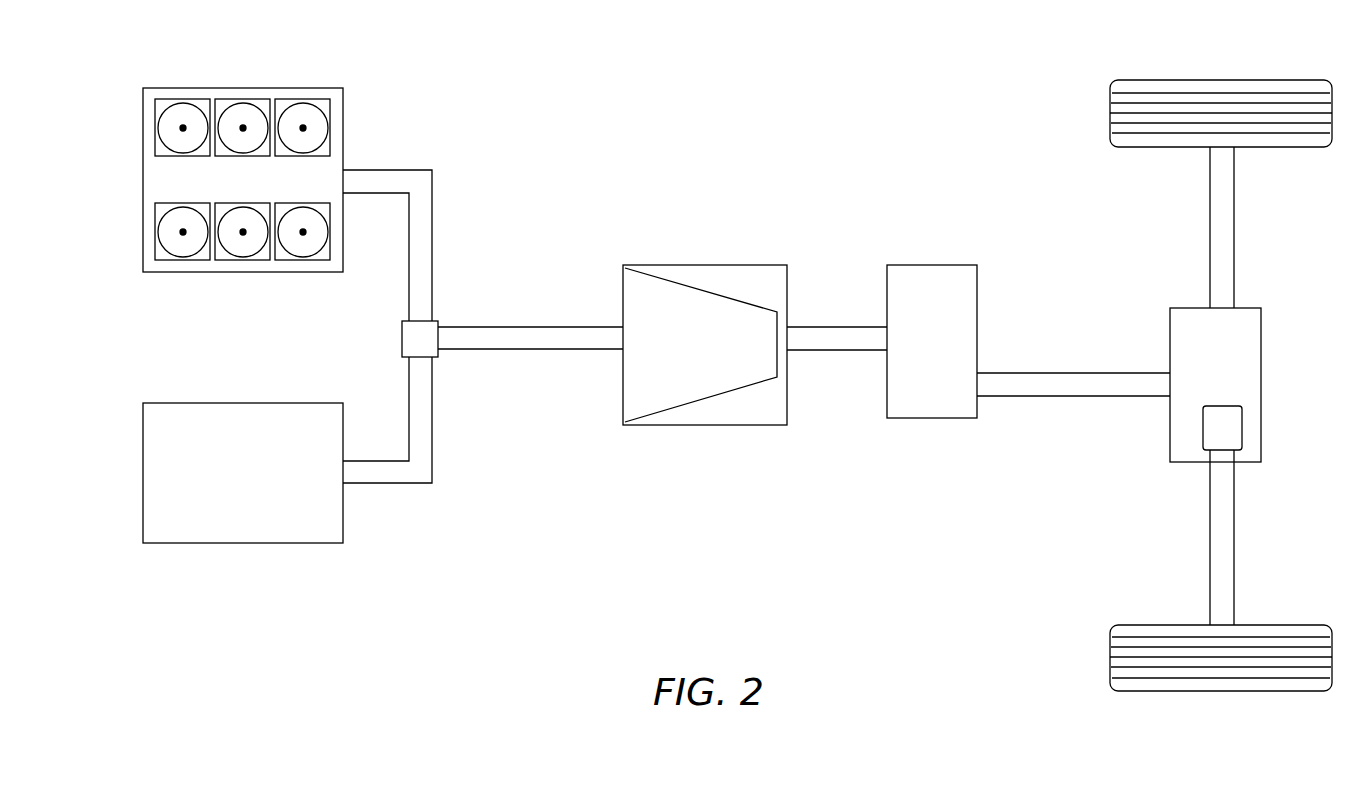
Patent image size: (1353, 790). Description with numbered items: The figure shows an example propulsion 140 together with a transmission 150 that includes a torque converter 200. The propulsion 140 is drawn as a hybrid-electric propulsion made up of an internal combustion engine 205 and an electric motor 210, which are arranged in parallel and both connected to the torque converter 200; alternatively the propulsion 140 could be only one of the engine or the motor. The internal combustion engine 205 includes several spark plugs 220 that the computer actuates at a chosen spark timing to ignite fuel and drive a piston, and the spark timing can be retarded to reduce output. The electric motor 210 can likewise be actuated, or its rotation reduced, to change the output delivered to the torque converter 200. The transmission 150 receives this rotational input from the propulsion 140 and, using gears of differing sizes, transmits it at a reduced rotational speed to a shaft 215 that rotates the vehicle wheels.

The propulsion 140 is at (78, 104).
The internal combustion engine 205 is at (168, 88).
The spark plug 220 is at (183, 128).
The electric motor 210 is at (178, 543).
The torque converter 200 is at (760, 265).
The transmission 150 is at (953, 265).
The shaft 215 is at (1115, 398).